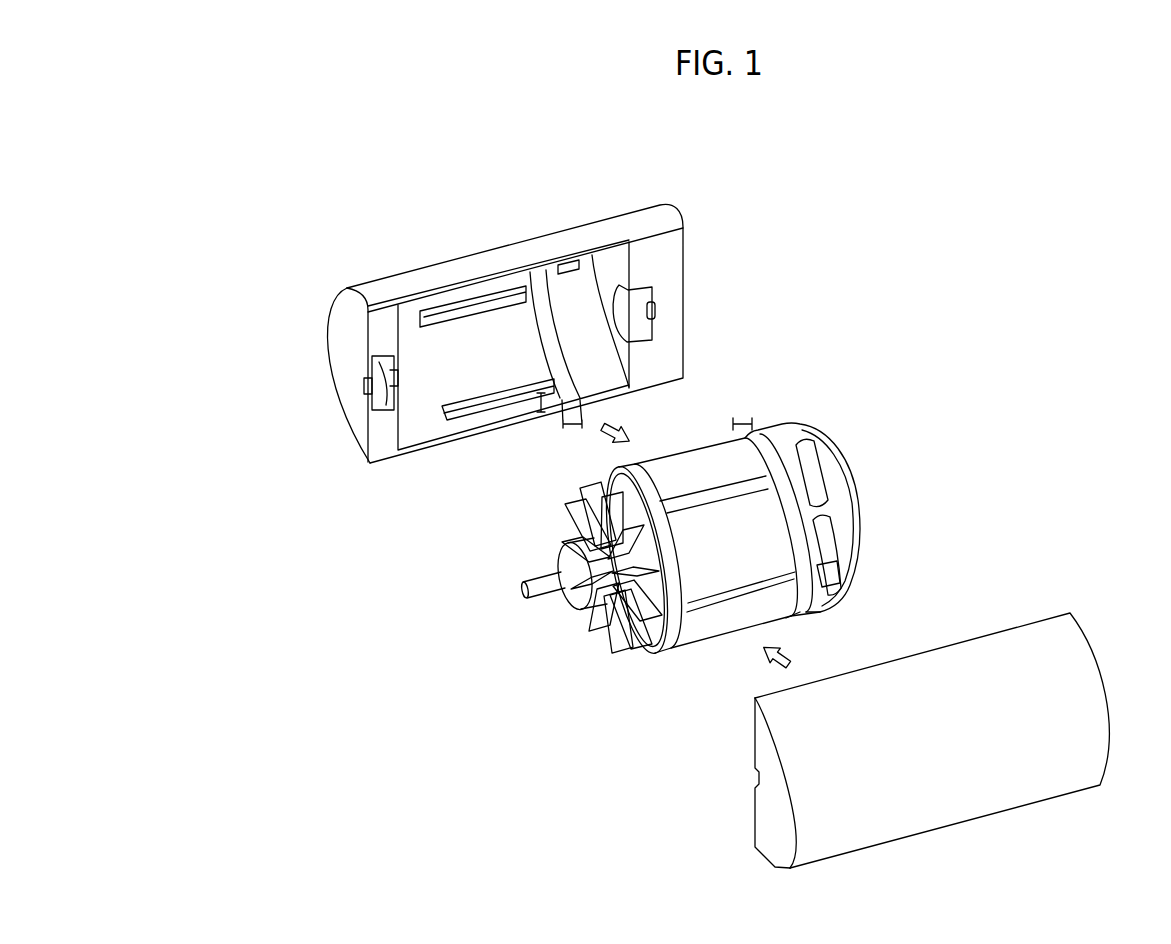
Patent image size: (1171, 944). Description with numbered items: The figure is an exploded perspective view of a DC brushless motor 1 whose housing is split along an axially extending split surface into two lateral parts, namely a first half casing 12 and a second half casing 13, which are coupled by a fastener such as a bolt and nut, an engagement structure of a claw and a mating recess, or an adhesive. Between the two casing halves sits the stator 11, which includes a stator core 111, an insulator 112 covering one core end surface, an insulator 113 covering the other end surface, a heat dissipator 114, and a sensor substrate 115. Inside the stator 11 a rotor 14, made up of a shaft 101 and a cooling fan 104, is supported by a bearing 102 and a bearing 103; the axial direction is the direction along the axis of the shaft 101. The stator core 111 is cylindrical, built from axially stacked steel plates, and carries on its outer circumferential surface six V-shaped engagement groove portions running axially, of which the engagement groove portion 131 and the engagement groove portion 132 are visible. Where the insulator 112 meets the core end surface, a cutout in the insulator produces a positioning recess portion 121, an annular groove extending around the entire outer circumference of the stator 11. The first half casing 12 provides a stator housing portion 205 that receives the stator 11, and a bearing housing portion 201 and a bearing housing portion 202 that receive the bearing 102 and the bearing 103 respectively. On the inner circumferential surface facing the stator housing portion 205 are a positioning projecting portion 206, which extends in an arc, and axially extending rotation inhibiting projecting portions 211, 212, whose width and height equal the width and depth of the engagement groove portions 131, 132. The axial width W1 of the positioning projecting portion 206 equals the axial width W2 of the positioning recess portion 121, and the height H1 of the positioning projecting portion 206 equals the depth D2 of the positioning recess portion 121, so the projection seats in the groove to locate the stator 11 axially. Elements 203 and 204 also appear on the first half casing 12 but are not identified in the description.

The DC brushless motor 1 is at (938, 264).
The stator 11 is at (838, 401).
The first half casing 12 is at (668, 254).
The second half casing 13 is at (1080, 642).
The rotor 14 is at (540, 570).
The shaft 101 is at (522, 580).
The bearing 102 is at (566, 606).
The bearing 103 is at (857, 496).
The cooling fan 104 is at (603, 658).
The stator core 111 is at (710, 630).
The insulator 112 is at (820, 574).
The insulator 113 is at (662, 653).
The heat dissipator 114 is at (820, 447).
The sensor substrate 115 is at (836, 566).
The positioning recess portion 121 is at (805, 530).
The engagement groove portion 131 is at (706, 495).
The engagement groove portion 132 is at (750, 580).
The bearing housing portion 201 is at (370, 410).
The bearing housing portion 202 is at (640, 322).
The engaging claw 203 is at (366, 385).
The hole 204 is at (656, 306).
The stator housing portion 205 is at (410, 333).
The positioning projecting portion 206 is at (577, 262).
The rotation inhibiting projecting portion 211 is at (478, 415).
The rotation inhibiting projecting portion 212 is at (442, 318).
The height of positioning projecting portion H1 is at (541, 414).
The axial width of positioning projecting portion W1 is at (582, 428).
The axial width of positioning recess portion W2 is at (738, 412).
The depth of positioning recess portion D2 is at (795, 616).